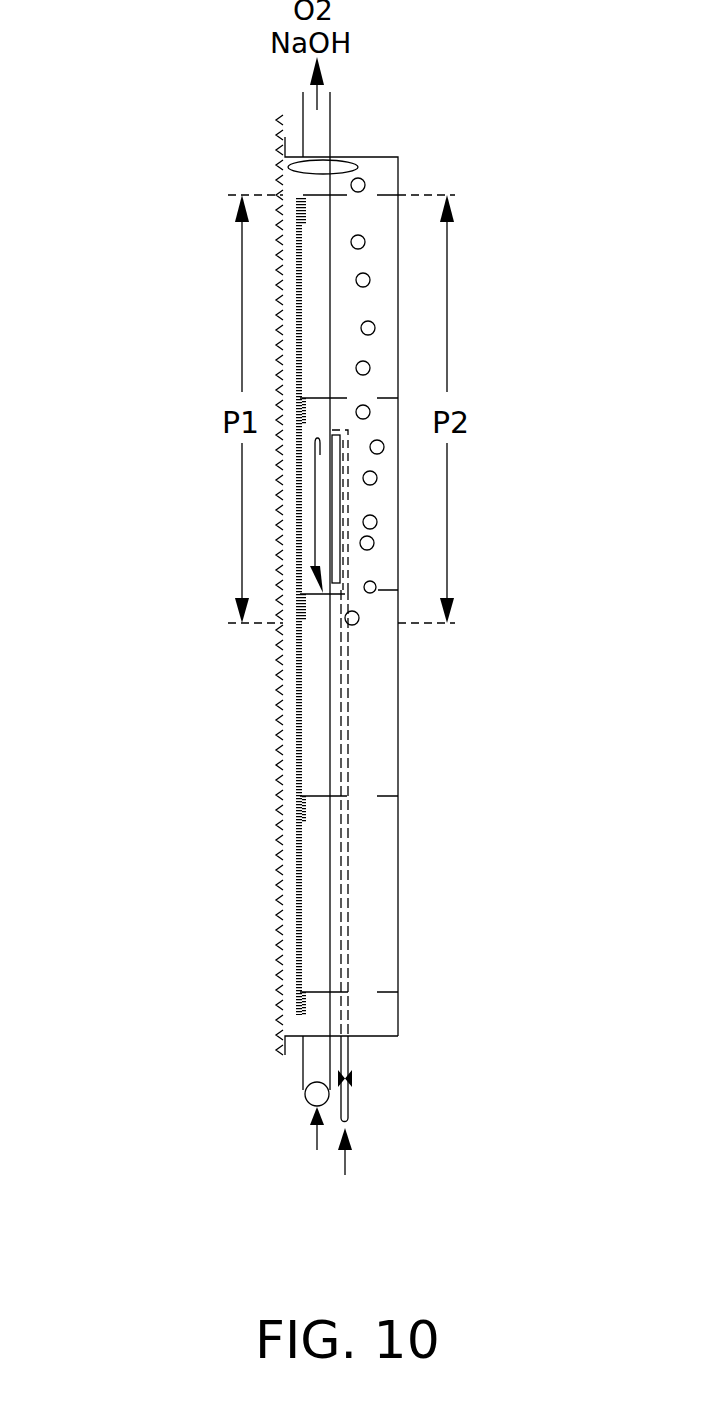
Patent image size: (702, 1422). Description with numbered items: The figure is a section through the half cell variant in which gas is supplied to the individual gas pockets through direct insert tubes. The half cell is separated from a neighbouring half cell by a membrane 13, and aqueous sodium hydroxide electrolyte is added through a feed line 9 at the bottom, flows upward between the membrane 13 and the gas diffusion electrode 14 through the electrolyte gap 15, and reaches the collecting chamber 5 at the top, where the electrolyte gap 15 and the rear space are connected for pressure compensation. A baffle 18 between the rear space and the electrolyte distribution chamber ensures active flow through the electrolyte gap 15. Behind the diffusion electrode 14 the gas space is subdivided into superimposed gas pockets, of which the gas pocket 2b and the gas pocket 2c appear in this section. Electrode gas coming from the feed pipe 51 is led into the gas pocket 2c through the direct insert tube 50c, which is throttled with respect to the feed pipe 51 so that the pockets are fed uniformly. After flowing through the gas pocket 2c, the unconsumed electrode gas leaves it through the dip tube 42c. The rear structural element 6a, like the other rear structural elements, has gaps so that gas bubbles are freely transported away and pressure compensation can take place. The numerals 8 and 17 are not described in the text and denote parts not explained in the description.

The collecting chamber 5 is at (382, 165).
The bottom wall 8 is at (375, 1018).
The membrane 13 is at (278, 948).
The gas diffusion electrode 14 is at (297, 875).
The electrolyte gap 15 is at (290, 560).
The partition plate 17 is at (298, 408).
The gas pocket 2b is at (317, 700).
The gas pocket 2c is at (322, 494).
The direct insert tube 50c is at (345, 468).
The dip tube 42c is at (380, 592).
The rear structural element 6a is at (388, 988).
The baffle 18 is at (330, 1025).
The feed line 9 is at (303, 1078).
The feed pipe 51 is at (350, 1123).